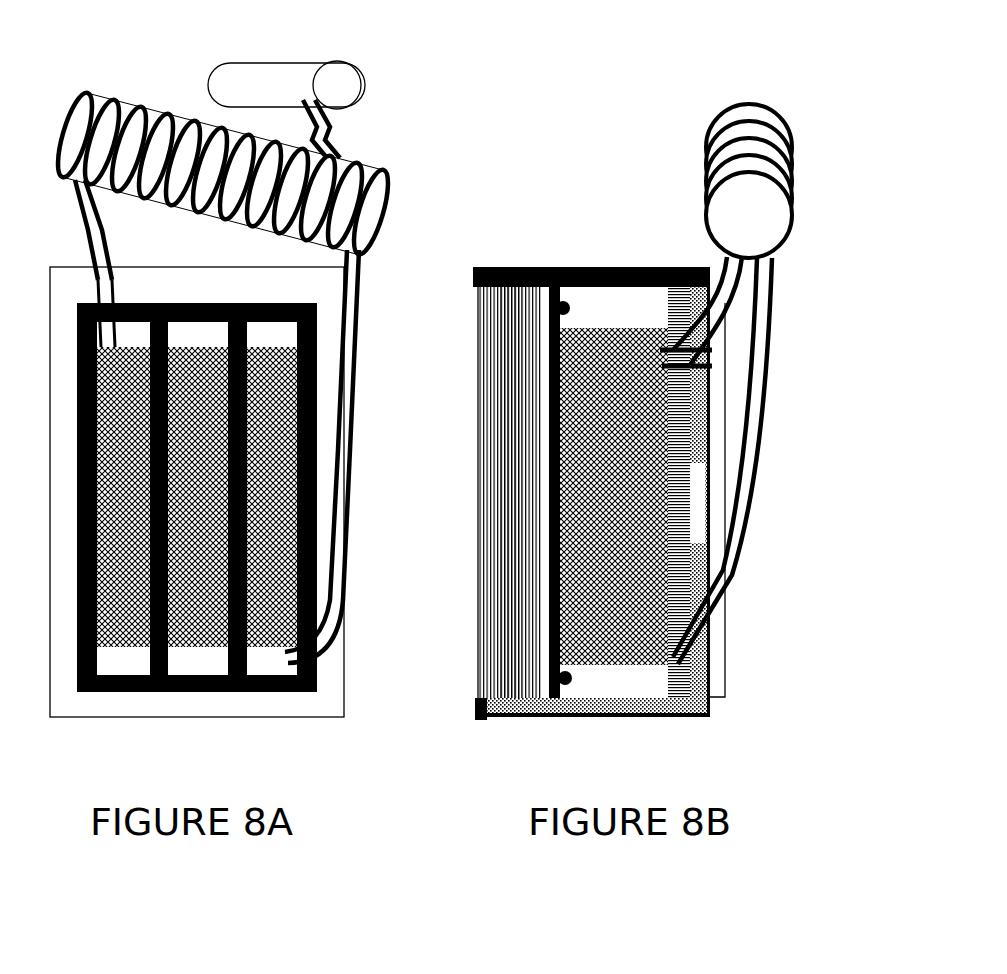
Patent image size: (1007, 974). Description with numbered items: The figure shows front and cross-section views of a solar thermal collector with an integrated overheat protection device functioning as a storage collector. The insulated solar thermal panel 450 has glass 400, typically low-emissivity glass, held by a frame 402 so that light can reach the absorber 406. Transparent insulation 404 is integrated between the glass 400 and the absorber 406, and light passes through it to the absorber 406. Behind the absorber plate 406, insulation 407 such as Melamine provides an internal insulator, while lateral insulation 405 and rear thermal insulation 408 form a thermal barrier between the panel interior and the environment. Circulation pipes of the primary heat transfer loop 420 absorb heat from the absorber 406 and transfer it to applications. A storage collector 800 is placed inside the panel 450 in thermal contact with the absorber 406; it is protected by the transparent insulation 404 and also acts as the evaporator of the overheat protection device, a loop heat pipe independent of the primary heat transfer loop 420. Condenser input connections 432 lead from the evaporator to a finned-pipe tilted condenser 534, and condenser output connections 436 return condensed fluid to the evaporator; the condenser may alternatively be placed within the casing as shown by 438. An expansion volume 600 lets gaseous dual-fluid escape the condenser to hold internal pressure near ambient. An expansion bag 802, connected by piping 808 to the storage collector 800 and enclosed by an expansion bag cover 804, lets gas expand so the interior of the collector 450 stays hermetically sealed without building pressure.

In FIG. 8B, the glass 400 is at (478, 320).
In FIG. 8A, the frame 402 is at (325, 292).
In FIG. 8B, the frame 402 is at (475, 272).
In FIG. 8B, the transparent insulation 404 is at (510, 370).
In FIG. 8B, the lateral insulation 405 is at (523, 270).
In FIG. 8B, the absorber 406 is at (550, 433).
In FIG. 8B, the insulation 407 is at (552, 477).
In FIG. 8B, the rear thermal insulation 408 is at (552, 553).
In FIG. 8A, the primary heat transfer loop 420 is at (322, 500).
In FIG. 8B, the primary heat transfer loop 420 is at (562, 296).
In FIG. 8A, the condenser input connections 432 is at (105, 236).
In FIG. 8B, the condenser input connections 432 is at (720, 270).
In FIG. 8A, the condenser output connections 436 is at (316, 432).
In FIG. 8B, the condenser output connections 436 is at (752, 440).
In FIG. 8B, the condenser placement within casing 438 is at (708, 507).
In FIG. 8A, the insulated solar thermal panel 450 is at (431, 716).
In FIG. 8A, the tilted condenser 534 is at (125, 105).
In FIG. 8B, the tilted condenser 534 is at (749, 181).
In FIG. 8A, the expansion volume 600 is at (286, 109).
In FIG. 8A, the storage collector 800 is at (250, 587).
In FIG. 8B, the storage collector 800 is at (552, 625).
In FIG. 8B, the expansion bag 802 is at (717, 627).
In FIG. 8B, the expansion bag cover 804 is at (727, 655).
In FIG. 8B, the piping 808 is at (714, 352).